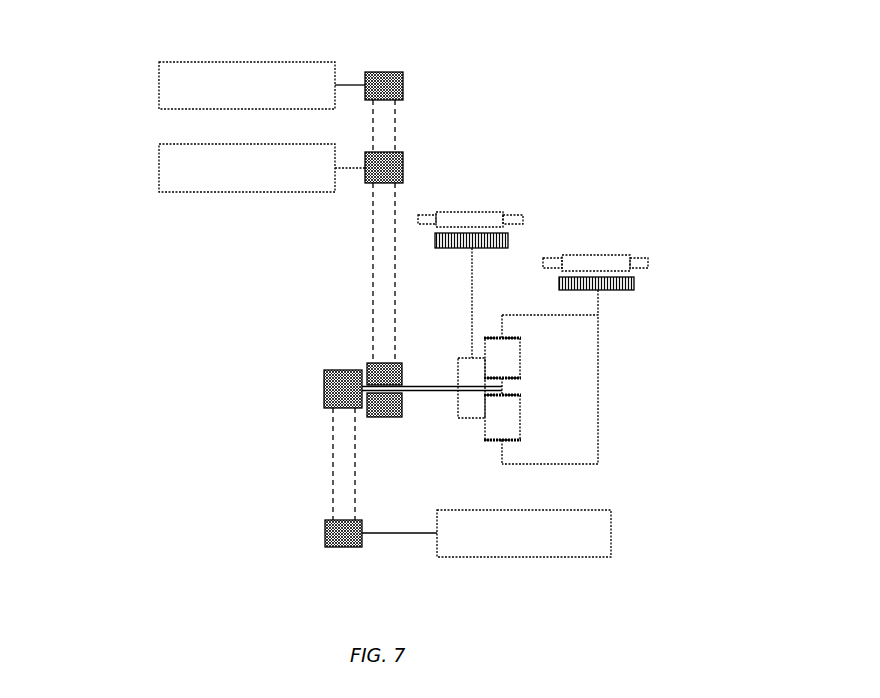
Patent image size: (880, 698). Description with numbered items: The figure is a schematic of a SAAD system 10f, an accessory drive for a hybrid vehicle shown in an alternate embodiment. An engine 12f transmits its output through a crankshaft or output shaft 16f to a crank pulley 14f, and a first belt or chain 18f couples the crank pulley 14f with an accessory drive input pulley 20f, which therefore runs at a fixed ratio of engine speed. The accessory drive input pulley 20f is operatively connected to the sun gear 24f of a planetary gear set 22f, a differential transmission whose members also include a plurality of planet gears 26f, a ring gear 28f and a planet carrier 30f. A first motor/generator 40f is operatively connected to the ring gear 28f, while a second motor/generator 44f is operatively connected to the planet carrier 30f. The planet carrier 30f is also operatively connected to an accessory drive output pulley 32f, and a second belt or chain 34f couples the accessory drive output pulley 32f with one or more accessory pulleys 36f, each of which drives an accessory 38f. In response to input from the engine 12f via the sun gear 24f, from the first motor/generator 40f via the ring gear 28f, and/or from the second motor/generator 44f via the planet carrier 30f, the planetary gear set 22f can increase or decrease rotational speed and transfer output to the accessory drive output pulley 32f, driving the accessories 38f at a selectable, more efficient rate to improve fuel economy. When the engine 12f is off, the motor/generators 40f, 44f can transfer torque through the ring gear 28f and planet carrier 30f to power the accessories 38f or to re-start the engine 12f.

The SAAD system 10f is at (681, 96).
The engine 12f is at (578, 557).
The crank pulley 14f is at (337, 548).
The output shaft 16f is at (420, 533).
The first belt or chain 18f is at (329, 468).
The accessory drive input pulley 20f is at (323, 378).
The planetary gear set 22f is at (615, 430).
The sun gear 24f is at (518, 383).
The planet gears 26f is at (510, 345).
The ring gear 28f is at (493, 337).
The planet carrier 30f is at (462, 419).
The accessory drive output pulley 32f is at (385, 418).
The second belt or chain 34f is at (398, 205).
The accessory pulley 36f is at (383, 72).
The accessory 38f is at (168, 62).
The first motor/generator 40f is at (623, 253).
The second motor/generator 44f is at (499, 210).